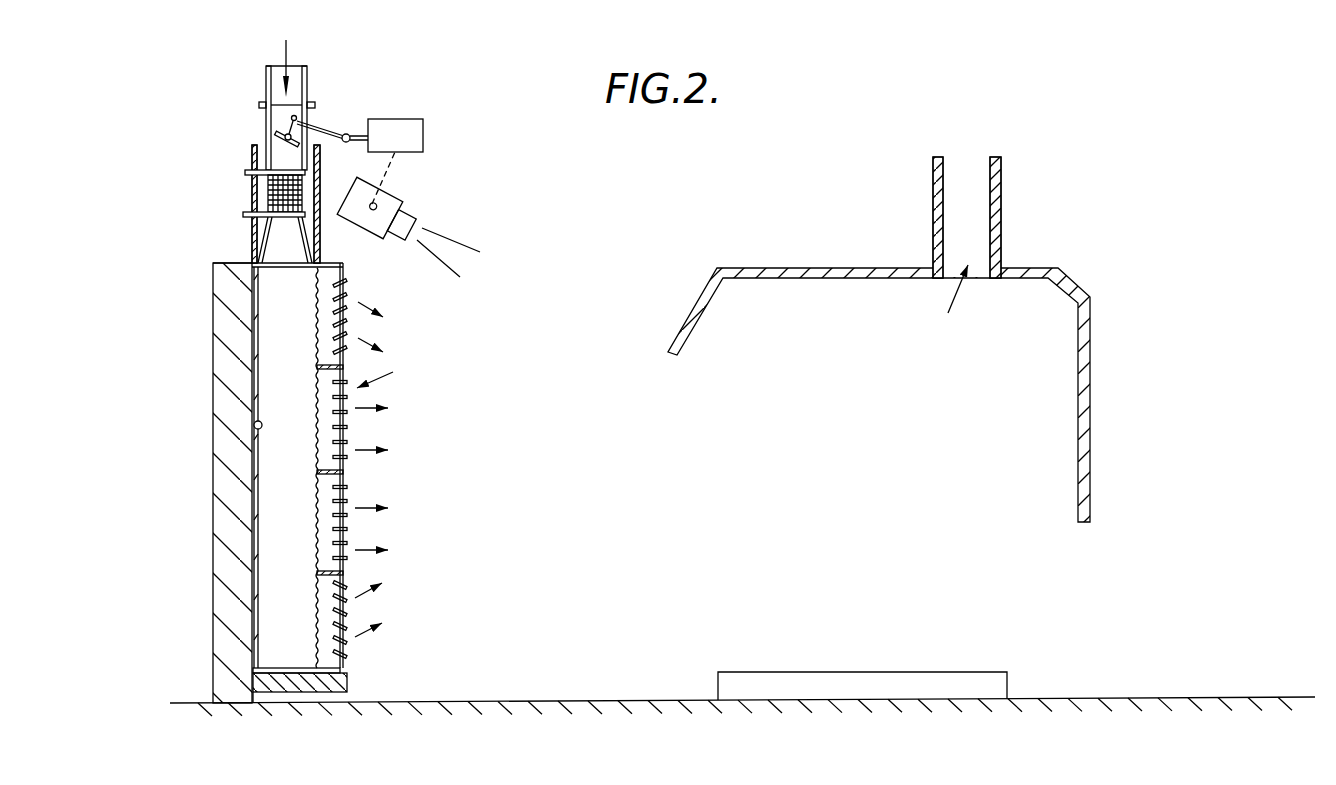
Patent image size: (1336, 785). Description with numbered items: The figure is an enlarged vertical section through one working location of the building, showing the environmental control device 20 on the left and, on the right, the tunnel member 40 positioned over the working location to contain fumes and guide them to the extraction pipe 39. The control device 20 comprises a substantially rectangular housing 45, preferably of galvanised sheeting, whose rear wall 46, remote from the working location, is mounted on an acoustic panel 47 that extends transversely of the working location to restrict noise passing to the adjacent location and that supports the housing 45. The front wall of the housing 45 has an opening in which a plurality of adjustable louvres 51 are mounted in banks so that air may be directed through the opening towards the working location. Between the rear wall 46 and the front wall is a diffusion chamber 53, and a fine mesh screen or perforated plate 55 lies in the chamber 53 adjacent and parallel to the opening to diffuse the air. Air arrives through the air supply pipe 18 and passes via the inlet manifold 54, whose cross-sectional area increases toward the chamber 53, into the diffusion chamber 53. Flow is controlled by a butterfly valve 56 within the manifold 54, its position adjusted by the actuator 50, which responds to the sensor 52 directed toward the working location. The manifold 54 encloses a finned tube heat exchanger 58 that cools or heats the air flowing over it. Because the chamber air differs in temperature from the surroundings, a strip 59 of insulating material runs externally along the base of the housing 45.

The air supply pipe 18 is at (266, 88).
The butterfly valve 56 is at (274, 137).
The inlet manifold 54 is at (263, 190).
The heat exchanger 58 is at (262, 203).
The housing 45 is at (245, 265).
The actuator 50 is at (423, 131).
The sensor 52 is at (400, 195).
The diffusion chamber 53 is at (272, 367).
The rear wall 46 is at (255, 424).
The acoustic panel 47 is at (234, 478).
The adjustable louvres 51 is at (345, 327).
The environmental control device 20 is at (437, 386).
The fine mesh screen or perforated plate 55 is at (320, 460).
The strip of insulating material 59 is at (348, 682).
The extraction pipe 39 is at (933, 210).
The tunnel member 40 is at (1097, 303).